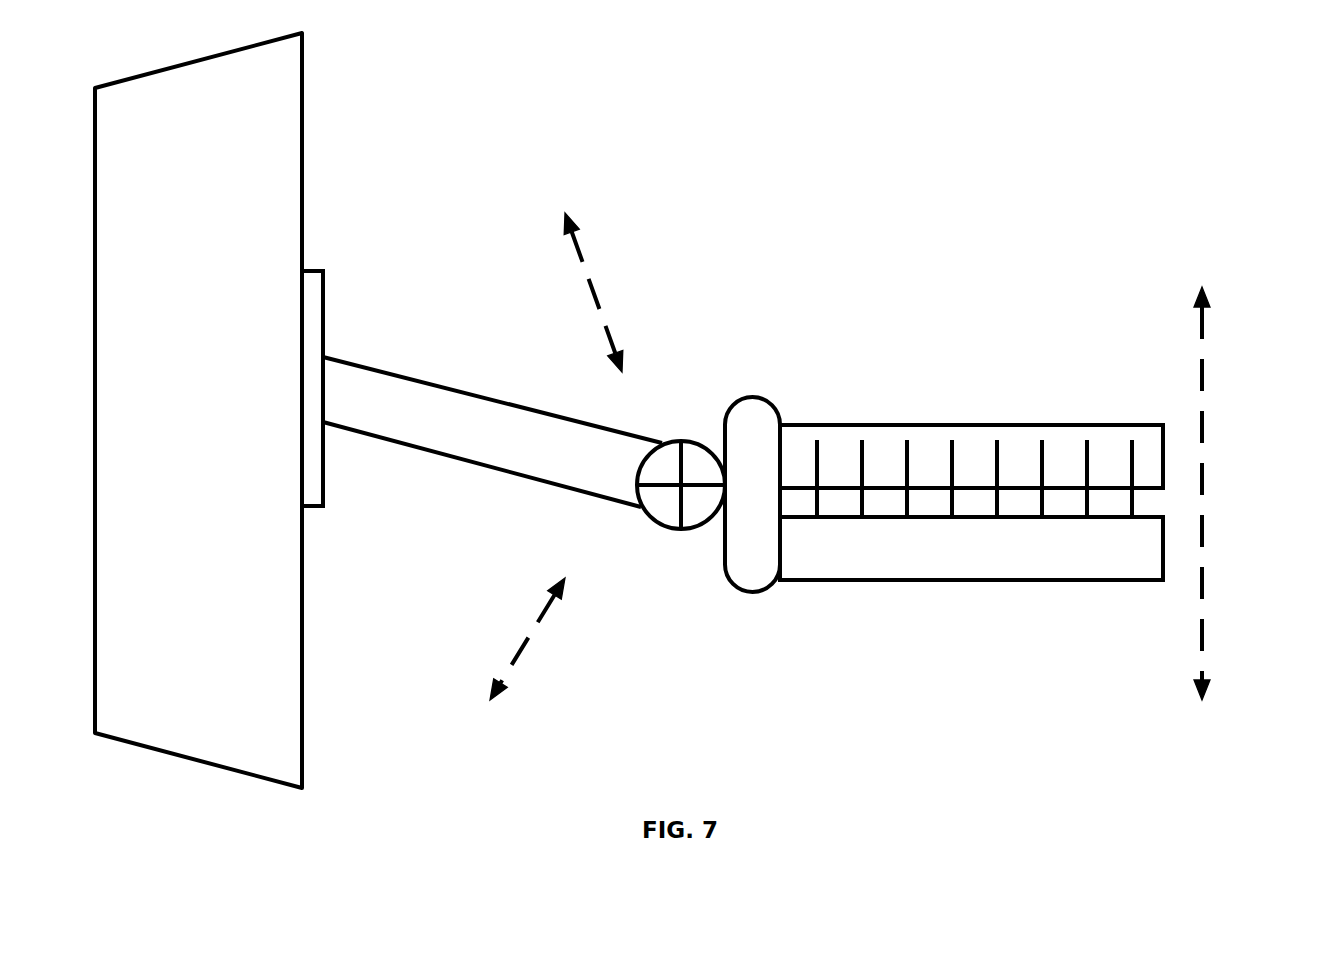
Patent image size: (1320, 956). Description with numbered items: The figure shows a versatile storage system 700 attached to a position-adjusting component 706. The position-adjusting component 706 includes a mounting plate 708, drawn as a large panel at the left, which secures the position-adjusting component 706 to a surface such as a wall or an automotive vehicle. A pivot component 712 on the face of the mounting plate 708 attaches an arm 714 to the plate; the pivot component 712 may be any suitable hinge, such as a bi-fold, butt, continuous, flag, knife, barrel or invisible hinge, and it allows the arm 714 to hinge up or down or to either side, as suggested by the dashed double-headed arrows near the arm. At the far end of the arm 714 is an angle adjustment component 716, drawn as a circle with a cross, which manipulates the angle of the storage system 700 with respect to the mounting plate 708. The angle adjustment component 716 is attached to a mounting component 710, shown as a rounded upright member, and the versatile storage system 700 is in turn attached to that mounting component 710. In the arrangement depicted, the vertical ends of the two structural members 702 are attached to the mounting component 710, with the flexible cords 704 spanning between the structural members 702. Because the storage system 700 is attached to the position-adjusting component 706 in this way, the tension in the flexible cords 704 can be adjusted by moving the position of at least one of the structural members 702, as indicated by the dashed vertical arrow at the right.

The versatile storage system 700 is at (1045, 477).
The structural members 702 is at (1063, 423).
The flexible cords 704 is at (1138, 473).
The position-adjusting component 706 is at (500, 149).
The mounting plate 708 is at (198, 410).
The mounting component 710 is at (757, 590).
The pivot component 712 is at (326, 458).
The arm 714 is at (492, 432).
The angle adjustment component 716 is at (650, 517).